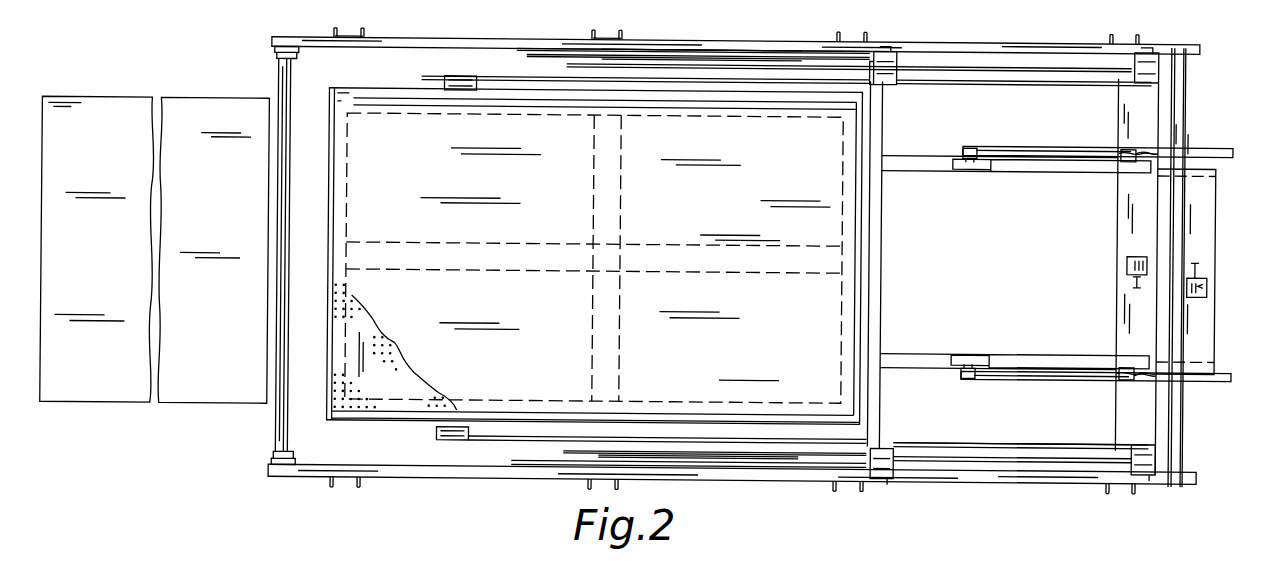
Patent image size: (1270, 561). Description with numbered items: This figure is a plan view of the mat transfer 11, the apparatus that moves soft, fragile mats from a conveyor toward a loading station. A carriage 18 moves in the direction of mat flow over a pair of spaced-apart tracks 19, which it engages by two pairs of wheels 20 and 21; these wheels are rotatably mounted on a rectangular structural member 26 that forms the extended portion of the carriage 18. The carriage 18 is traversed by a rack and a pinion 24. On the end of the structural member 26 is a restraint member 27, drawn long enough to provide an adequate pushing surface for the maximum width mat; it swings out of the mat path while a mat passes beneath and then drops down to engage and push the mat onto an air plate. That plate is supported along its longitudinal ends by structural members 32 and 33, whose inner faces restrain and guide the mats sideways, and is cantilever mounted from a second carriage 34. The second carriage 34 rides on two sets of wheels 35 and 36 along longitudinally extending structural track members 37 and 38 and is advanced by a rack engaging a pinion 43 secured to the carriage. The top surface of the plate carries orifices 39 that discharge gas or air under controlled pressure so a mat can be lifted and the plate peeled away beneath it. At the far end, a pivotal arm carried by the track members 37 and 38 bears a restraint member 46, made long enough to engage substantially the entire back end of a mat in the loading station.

The mat transfer 11 is at (806, 481).
The carriage 18 is at (1210, 352).
The tracks 19 is at (1035, 153).
The wheels 20 is at (971, 146).
The wheels 21 is at (1127, 146).
The pinion 24 is at (1208, 288).
The rectangular structural member 26 is at (1052, 166).
The restraint member 27 is at (862, 320).
The structural member 32 is at (492, 432).
The structural member 33 is at (481, 78).
The second carriage 34 is at (1002, 447).
The wheels 35 is at (884, 46).
The wheels 36 is at (1148, 47).
The structural track member 37 is at (405, 473).
The structural track member 38 is at (405, 45).
The orifices 39 is at (333, 410).
The pinion 43 is at (1127, 267).
The restraint member 46 is at (268, 400).